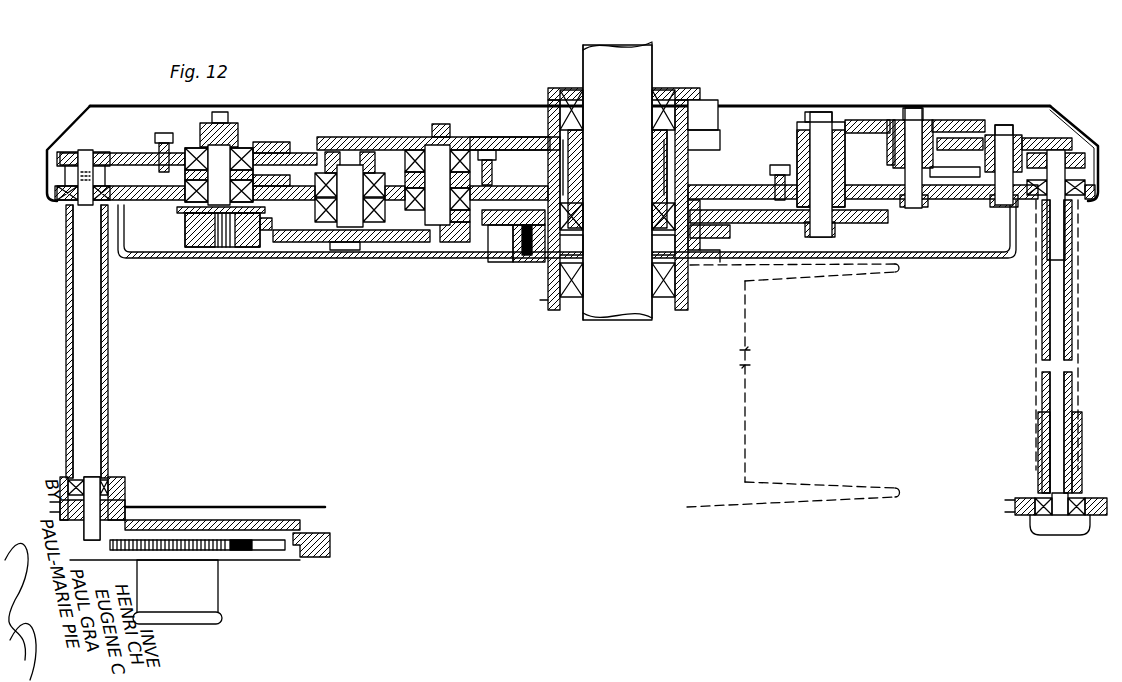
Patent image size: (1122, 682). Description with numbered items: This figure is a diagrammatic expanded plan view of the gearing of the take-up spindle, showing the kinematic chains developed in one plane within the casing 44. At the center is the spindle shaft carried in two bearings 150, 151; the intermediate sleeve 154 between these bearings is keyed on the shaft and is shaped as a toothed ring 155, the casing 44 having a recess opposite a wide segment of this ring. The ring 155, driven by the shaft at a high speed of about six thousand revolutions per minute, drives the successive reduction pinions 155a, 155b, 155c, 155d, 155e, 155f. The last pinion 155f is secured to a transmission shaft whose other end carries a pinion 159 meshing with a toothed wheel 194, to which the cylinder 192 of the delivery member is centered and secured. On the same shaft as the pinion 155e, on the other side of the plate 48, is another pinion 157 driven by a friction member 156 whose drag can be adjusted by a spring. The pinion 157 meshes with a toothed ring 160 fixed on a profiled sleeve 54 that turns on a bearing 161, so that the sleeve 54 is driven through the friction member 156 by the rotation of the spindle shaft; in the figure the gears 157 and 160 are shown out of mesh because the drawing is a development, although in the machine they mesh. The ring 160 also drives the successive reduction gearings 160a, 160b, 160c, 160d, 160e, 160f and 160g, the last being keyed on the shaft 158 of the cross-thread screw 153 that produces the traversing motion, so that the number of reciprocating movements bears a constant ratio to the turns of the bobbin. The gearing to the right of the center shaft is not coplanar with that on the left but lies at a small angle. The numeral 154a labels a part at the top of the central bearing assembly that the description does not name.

The casing 44 is at (520, 106).
The plate 48 is at (728, 187).
The profiled sleeve 54 is at (545, 303).
The bearing 150 is at (578, 118).
The bearing 151 is at (578, 212).
The cross-thread screw 153 is at (1050, 387).
The intermediate sleeve 154 is at (653, 168).
The bearing cap 154a is at (557, 100).
The toothed ring 155 is at (653, 140).
The reduction pinion 155a is at (493, 137).
The reduction pinion 155b is at (462, 242).
The reduction pinion 155c is at (397, 242).
The reduction pinion 155d is at (360, 165).
The reduction pinion 155e is at (305, 150).
The reduction pinion 155f is at (100, 152).
The friction member 156 is at (243, 247).
The pinion 157 is at (267, 240).
The shaft 158 is at (1053, 252).
The pinion 159 is at (103, 543).
The toothed ring 160 is at (503, 230).
The reduction gearing 160a is at (860, 222).
The reduction gearing 160b is at (813, 117).
The reduction gearing 160c is at (942, 125).
The reduction gearing 160d is at (890, 147).
The reduction gearing 160e is at (1033, 137).
The reduction gearing 160f is at (980, 150).
The reduction gearing 160g is at (1070, 150).
The bearing 161 is at (578, 277).
The cylinder 192 is at (203, 600).
The toothed wheel 194 is at (232, 550).